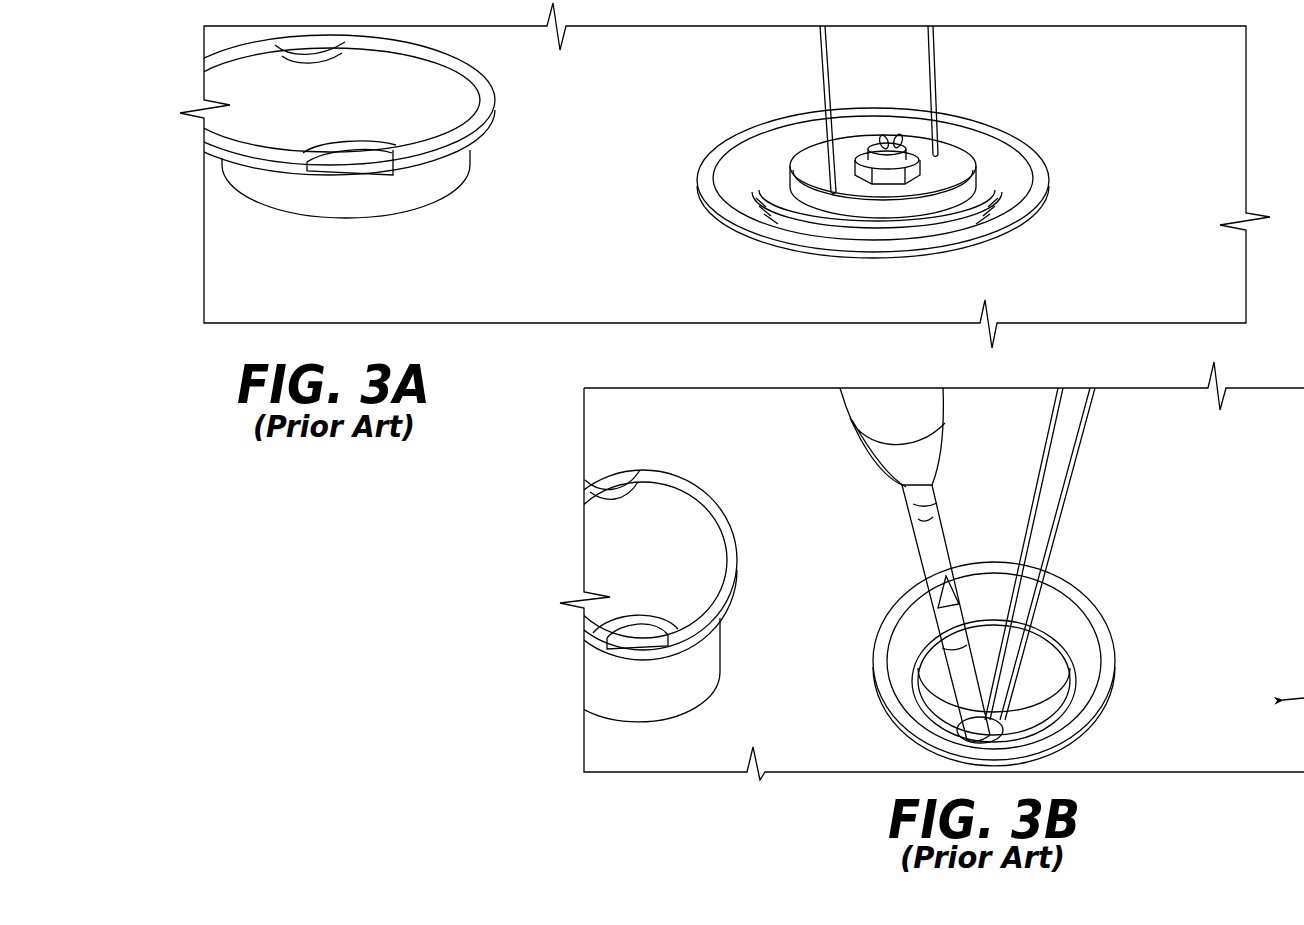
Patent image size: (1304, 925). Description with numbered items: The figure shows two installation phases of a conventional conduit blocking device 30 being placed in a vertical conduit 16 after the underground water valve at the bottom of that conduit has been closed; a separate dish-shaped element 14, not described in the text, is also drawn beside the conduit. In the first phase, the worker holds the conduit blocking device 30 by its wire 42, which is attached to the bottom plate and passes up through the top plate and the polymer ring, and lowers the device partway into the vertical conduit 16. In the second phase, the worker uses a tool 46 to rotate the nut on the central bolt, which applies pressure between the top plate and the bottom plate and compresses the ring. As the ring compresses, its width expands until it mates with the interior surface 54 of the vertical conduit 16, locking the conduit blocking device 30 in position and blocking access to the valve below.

In FIG. 3A, the dish 14 is at (447, 176).
In FIG. 3B, the dish 14 is at (695, 505).
In FIG. 3A, the vertical conduit 16 is at (1049, 159).
In FIG. 3B, the vertical conduit 16 is at (1118, 644).
In FIG. 3A, the conduit blocking device 30 is at (952, 168).
In FIG. 3A, the wire 42 is at (817, 54).
In FIG. 3B, the wire 42 is at (1046, 490).
In FIG. 3B, the tool 46 is at (931, 547).
In FIG. 3B, the interior surface 54 is at (1050, 707).